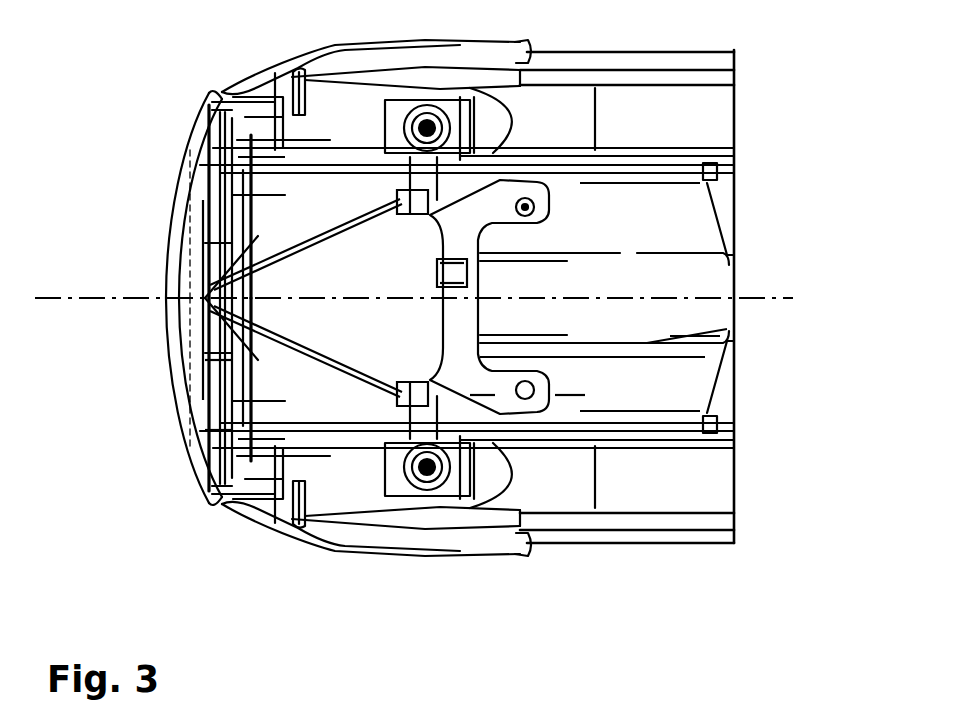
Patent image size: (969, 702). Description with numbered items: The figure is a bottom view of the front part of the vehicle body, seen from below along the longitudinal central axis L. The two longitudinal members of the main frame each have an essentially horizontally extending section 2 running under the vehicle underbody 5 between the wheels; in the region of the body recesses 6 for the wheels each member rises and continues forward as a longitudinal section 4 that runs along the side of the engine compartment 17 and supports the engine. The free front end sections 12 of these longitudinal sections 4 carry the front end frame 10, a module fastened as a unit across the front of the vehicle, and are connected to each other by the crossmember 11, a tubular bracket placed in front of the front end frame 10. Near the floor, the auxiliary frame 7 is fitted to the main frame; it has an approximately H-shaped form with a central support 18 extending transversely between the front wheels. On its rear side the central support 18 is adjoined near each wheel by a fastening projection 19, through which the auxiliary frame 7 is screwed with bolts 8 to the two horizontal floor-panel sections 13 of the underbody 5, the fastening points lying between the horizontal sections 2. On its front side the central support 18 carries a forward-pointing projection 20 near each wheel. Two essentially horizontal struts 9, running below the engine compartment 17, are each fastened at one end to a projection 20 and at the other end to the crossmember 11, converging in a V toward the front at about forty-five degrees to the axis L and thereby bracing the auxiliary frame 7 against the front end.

The essentially horizontally extending section 2 is at (607, 427).
The longitudinal section 4 is at (239, 156).
The vehicle underbody 5 is at (570, 383).
The body recess 6 is at (420, 117).
The auxiliary frame 7 is at (485, 383).
The bolt 8 is at (525, 390).
The strut 9 is at (290, 247).
The front end frame 10 is at (200, 373).
The crossmember 11 is at (200, 283).
The front end section 12 is at (207, 430).
The floor-panel section 13 is at (553, 213).
The engine compartment 17 is at (318, 321).
The central support 18 is at (450, 273).
The fastening projection 19 is at (507, 200).
The projection 20 is at (404, 210).
The longitudinal central axis L is at (753, 298).